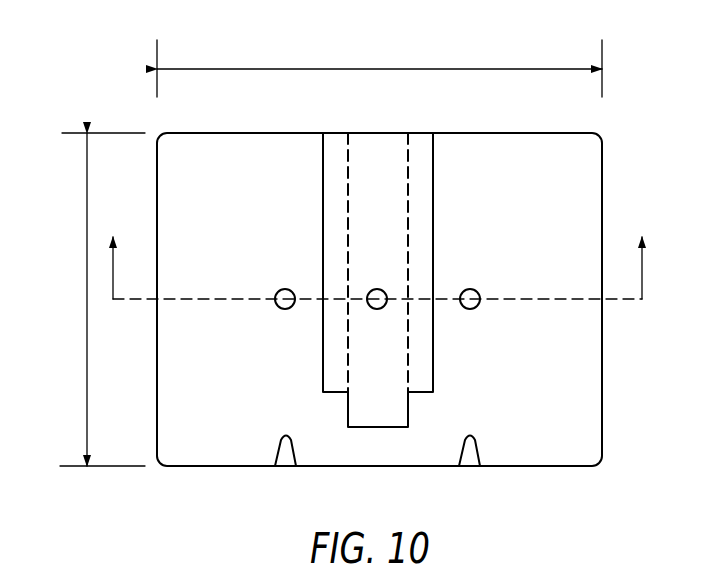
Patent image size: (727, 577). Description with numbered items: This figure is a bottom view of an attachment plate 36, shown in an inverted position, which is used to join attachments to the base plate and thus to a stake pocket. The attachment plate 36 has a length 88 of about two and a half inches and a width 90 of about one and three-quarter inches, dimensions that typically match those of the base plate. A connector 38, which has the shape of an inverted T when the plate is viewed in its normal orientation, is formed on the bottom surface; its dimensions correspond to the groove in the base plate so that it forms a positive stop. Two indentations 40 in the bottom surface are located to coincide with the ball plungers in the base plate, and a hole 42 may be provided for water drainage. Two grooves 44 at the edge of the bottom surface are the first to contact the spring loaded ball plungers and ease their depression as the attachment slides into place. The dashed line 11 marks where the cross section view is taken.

The attachment plate 36 is at (569, 178).
The connector 38 is at (382, 152).
The indentations 40 is at (281, 293).
The hole 42 is at (371, 294).
The grooves 44 is at (283, 452).
The length 88 is at (420, 69).
The width 90 is at (87, 298).
The line 11-11' 11 is at (381, 253).